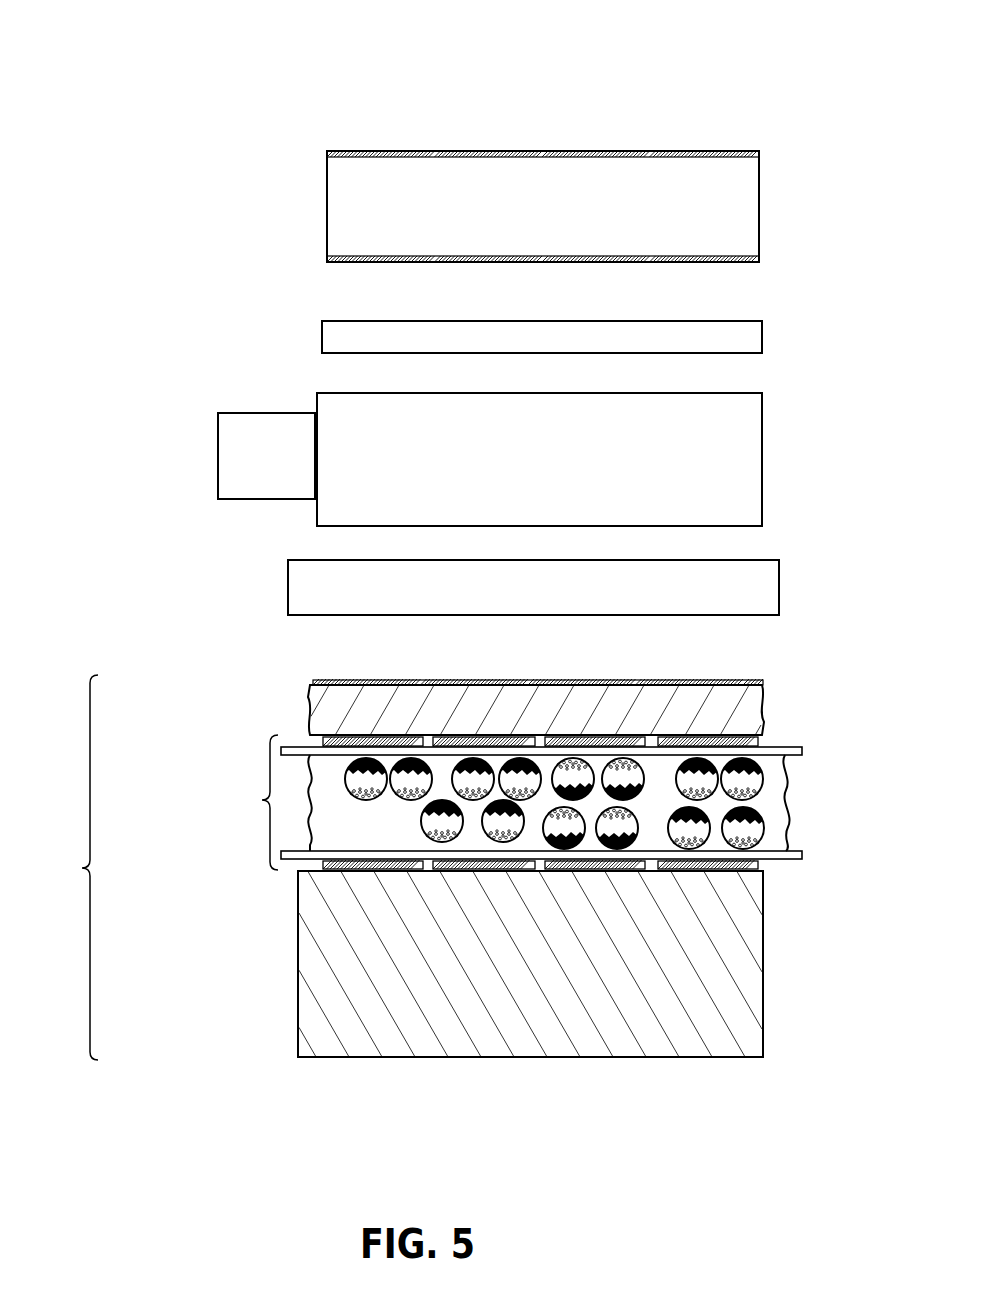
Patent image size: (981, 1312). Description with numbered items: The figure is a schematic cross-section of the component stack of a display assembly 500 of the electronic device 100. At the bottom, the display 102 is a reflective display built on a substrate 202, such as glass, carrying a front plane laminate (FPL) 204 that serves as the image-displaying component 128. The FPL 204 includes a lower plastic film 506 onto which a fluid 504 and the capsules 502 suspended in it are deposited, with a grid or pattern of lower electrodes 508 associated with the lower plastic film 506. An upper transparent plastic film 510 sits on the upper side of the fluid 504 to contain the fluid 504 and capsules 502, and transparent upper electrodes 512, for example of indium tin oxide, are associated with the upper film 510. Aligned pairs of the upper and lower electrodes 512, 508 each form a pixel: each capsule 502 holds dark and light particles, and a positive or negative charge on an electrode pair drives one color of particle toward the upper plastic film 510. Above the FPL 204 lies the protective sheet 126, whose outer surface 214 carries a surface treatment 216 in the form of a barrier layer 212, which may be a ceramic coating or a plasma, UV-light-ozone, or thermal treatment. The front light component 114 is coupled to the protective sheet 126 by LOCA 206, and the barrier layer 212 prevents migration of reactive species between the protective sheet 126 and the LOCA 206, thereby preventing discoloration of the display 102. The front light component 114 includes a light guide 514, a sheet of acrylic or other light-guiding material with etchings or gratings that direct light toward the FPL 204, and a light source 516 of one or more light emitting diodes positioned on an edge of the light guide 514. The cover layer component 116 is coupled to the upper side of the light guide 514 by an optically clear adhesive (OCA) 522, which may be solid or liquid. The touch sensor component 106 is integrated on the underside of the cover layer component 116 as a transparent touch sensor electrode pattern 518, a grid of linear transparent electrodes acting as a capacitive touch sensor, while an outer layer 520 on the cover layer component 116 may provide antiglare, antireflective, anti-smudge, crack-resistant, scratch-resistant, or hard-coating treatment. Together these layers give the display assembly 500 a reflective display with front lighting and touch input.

The display assembly 500 is at (95, 38).
The cover layer component 116 is at (687, 216).
The outer layer 520 is at (330, 152).
The touch sensor electrode pattern 518 is at (330, 262).
The touch sensor component 106 is at (253, 245).
The optically clear adhesive (OCA) 522 is at (723, 346).
The front light component 114 is at (190, 400).
The light guide 514 is at (618, 468).
The light source 516 is at (283, 490).
The liquid optically clear adhesive (LOCA) 206 is at (753, 598).
The display 102 is at (56, 867).
The outer surface 214 is at (745, 662).
The surface treatment 216 is at (400, 672).
The barrier layer 212 is at (453, 683).
The protective sheet 126 is at (300, 700).
The upper electrodes 512 is at (307, 740).
The upper transparent plastic film 510 is at (767, 746).
The front plane laminate (FPL) 204 is at (505, 802).
The fluid 504 is at (308, 812).
The capsules 502 is at (406, 820).
The lower plastic film 506 is at (766, 861).
The lower electrodes 508 is at (313, 865).
The image-displaying component 128 is at (773, 890).
The substrate 202 is at (298, 1020).
The electronic device 100 is at (722, 1088).